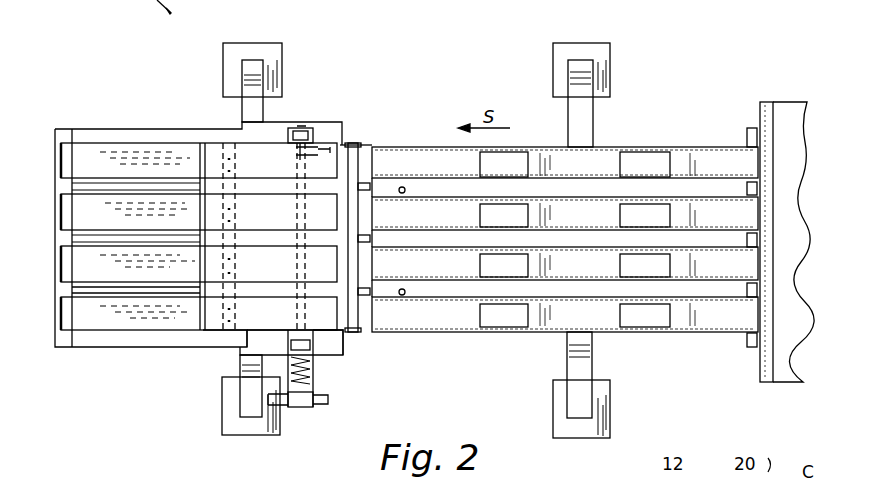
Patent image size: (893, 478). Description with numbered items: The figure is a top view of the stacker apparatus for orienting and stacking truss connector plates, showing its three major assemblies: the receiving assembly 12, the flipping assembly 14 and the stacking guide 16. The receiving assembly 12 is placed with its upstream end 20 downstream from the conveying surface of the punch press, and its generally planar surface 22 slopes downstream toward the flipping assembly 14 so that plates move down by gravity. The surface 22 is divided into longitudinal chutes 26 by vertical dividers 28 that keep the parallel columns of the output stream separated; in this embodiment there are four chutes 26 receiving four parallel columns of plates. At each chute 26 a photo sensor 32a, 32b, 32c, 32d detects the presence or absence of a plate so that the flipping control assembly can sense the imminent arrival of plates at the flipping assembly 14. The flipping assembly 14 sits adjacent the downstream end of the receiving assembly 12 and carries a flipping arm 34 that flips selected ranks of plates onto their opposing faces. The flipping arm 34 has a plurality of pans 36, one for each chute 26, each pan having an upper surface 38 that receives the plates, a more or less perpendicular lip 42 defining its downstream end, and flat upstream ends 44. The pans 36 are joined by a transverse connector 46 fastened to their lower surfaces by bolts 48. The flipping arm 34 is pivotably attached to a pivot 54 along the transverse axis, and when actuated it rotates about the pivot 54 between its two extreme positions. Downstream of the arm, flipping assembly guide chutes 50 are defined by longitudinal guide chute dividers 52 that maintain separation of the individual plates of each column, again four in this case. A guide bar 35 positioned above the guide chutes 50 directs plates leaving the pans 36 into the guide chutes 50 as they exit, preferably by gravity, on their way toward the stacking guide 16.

The receiving assembly 12 is at (685, 87).
The flipping assembly 14 is at (323, 52).
The stacking guide 16 is at (155, 58).
The upstream end 20 is at (758, 273).
The planar surface 22 is at (721, 277).
The longitudinal chutes 26 is at (716, 214).
The vertical dividers 28 is at (480, 247).
The photo sensor 32a is at (405, 163).
The photo sensor 32b is at (405, 215).
The photo sensor 32c is at (405, 265).
The photo sensor 32d is at (405, 315).
The flipping arm 34 is at (242, 315).
The guide bar 35 is at (357, 157).
The pans 36 is at (208, 207).
The upper surface 38 is at (281, 173).
The lip 42 is at (205, 315).
The upstream ends 44 is at (339, 320).
The transverse connector 46 is at (205, 287).
The bolts 48 is at (235, 160).
The guide chutes 50 is at (367, 210).
The guide chute dividers 52 is at (367, 332).
The pivot 54 is at (304, 128).